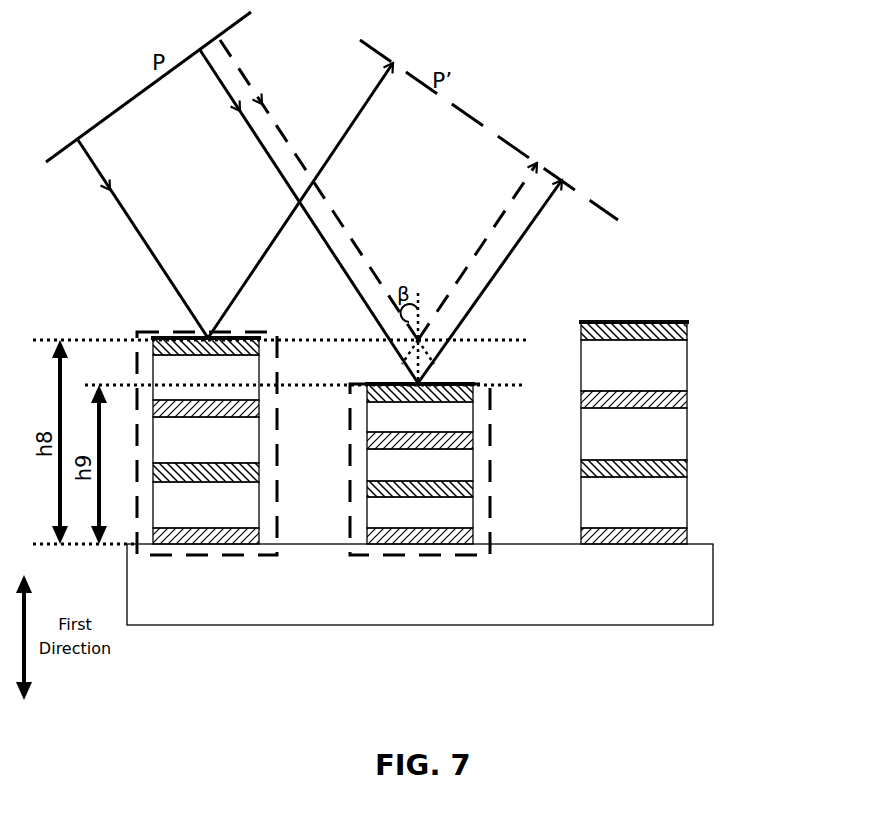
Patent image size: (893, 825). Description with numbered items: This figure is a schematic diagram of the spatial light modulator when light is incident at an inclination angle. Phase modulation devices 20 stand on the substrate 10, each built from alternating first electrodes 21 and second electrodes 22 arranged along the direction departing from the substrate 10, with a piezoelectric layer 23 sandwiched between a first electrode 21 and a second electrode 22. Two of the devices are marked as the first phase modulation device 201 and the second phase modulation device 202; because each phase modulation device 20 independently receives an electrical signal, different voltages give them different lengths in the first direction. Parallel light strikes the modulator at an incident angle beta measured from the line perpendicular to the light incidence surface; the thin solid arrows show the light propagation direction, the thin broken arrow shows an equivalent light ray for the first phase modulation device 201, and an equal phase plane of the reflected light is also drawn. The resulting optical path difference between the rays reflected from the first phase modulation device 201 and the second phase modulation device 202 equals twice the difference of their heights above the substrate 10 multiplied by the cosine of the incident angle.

The substrate 10 is at (572, 598).
The phase modulation device 20 is at (474, 501).
The first phase modulation device 201 is at (219, 555).
The second phase modulation device 202 is at (435, 555).
The first electrode 21 is at (683, 530).
The second electrode 22 is at (683, 330).
The piezoelectric layer 23 is at (683, 427).